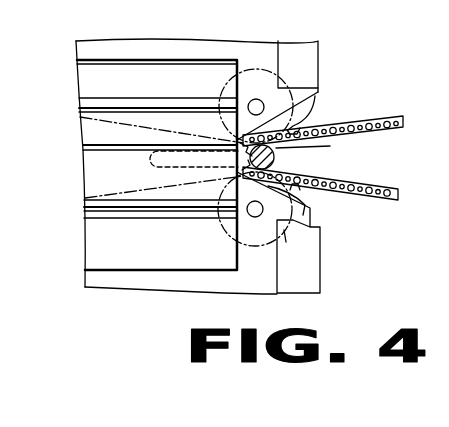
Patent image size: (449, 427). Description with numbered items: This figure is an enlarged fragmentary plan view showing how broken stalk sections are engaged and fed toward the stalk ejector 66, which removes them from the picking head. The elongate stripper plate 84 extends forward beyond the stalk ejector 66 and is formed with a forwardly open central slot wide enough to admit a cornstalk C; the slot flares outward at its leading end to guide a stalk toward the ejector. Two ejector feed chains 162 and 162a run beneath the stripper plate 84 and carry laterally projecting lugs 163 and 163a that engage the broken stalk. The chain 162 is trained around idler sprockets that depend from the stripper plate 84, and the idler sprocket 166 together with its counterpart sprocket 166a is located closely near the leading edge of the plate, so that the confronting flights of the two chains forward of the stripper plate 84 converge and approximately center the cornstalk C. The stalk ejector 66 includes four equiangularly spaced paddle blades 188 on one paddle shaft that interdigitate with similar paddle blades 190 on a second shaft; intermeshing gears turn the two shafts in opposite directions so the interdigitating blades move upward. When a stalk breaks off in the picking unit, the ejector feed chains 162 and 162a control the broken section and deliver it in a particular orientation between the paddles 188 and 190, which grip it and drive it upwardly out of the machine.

The stripper plate 84 is at (210, 40).
The stalk ejector 66 is at (72, 82).
The paddle blades 190 is at (80, 95).
The paddle blades 188 is at (88, 183).
The laterally projecting lug 163a is at (238, 140).
The laterally projecting lug 163 is at (302, 172).
The cornstalk C is at (311, 147).
The ejector feed chain 162a is at (394, 114).
The ejector feed chain 162 is at (386, 202).
The idler sprocket 166a is at (306, 106).
The idler sprocket 166 is at (303, 202).